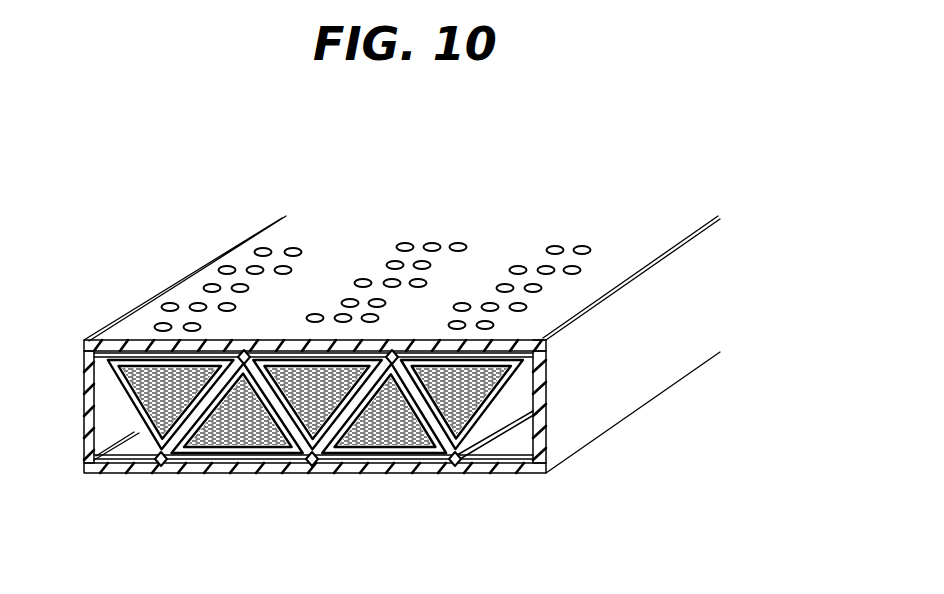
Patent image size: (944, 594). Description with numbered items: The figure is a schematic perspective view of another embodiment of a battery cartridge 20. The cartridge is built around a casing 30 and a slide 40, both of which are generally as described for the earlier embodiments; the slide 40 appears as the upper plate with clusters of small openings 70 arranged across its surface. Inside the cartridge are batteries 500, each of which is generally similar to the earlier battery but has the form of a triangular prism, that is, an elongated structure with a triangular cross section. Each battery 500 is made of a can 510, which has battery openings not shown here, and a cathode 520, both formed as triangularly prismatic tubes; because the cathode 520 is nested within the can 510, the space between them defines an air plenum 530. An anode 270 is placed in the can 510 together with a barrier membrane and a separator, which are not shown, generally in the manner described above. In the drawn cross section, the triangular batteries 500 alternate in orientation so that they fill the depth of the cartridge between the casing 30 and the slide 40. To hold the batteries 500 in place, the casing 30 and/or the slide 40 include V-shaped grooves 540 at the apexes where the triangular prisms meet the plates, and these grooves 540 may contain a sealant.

The battery cartridge 20 is at (693, 131).
The casing 30 is at (630, 415).
The slide 40 is at (122, 347).
The perforations 70 is at (590, 252).
The anode 270 is at (140, 395).
The battery 500 is at (493, 432).
The can 510 is at (428, 463).
The cathode 520 is at (270, 463).
The air plenum 530 is at (194, 463).
The V-shaped grooves 540 is at (247, 348).